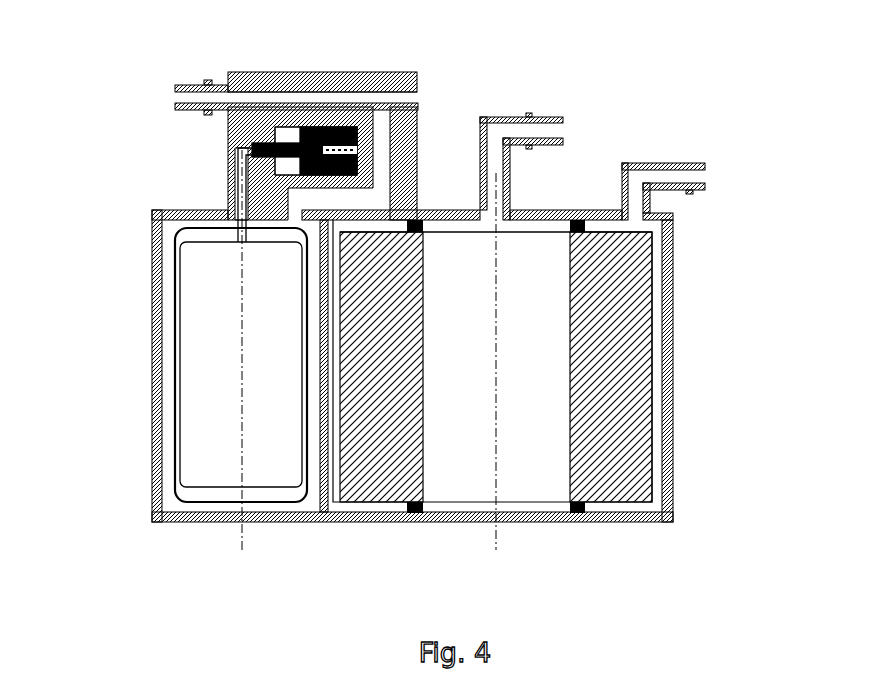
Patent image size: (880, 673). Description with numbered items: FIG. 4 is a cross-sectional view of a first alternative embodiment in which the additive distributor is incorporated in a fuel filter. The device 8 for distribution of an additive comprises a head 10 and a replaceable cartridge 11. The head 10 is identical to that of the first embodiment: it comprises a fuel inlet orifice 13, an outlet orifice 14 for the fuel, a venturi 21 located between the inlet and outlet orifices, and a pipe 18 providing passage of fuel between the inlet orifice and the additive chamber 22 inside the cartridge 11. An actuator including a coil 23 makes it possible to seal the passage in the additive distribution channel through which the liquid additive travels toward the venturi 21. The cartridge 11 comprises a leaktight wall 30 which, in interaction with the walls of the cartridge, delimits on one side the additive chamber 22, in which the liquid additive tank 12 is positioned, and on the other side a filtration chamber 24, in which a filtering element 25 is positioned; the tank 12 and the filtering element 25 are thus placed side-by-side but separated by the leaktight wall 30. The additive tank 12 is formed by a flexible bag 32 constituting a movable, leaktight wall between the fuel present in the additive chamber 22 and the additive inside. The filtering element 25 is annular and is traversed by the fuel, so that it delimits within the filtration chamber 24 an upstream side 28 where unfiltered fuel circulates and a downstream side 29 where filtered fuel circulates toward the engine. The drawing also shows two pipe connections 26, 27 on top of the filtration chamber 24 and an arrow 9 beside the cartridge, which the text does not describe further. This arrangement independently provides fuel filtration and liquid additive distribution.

The device for distribution of an additive 8 is at (105, 299).
The flow direction arrow 9 is at (710, 482).
The head 10 is at (340, 72).
The replaceable cartridge 11 is at (153, 442).
The liquid additive tank 12 is at (210, 363).
The fuel inlet orifice 13 is at (403, 95).
The outlet orifice for the fuel 14 is at (182, 85).
The pipe 18 is at (378, 167).
The venturi 21 is at (261, 143).
The additive chamber 22 is at (173, 507).
The coil 23 is at (238, 168).
The filtration chamber 24 is at (342, 505).
The filtering element 25 is at (642, 378).
The outlet pipe 26 is at (680, 183).
The inlet pipe 27 is at (548, 130).
The upstream side 28 is at (653, 235).
The downstream side 29 is at (458, 455).
The leaktight wall 30 is at (234, 373).
The flexible bag 32 is at (175, 262).